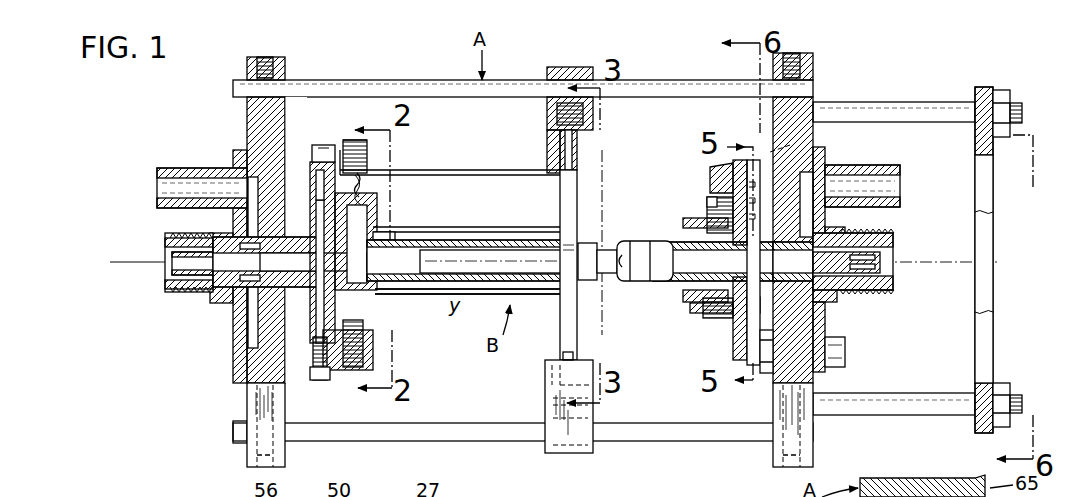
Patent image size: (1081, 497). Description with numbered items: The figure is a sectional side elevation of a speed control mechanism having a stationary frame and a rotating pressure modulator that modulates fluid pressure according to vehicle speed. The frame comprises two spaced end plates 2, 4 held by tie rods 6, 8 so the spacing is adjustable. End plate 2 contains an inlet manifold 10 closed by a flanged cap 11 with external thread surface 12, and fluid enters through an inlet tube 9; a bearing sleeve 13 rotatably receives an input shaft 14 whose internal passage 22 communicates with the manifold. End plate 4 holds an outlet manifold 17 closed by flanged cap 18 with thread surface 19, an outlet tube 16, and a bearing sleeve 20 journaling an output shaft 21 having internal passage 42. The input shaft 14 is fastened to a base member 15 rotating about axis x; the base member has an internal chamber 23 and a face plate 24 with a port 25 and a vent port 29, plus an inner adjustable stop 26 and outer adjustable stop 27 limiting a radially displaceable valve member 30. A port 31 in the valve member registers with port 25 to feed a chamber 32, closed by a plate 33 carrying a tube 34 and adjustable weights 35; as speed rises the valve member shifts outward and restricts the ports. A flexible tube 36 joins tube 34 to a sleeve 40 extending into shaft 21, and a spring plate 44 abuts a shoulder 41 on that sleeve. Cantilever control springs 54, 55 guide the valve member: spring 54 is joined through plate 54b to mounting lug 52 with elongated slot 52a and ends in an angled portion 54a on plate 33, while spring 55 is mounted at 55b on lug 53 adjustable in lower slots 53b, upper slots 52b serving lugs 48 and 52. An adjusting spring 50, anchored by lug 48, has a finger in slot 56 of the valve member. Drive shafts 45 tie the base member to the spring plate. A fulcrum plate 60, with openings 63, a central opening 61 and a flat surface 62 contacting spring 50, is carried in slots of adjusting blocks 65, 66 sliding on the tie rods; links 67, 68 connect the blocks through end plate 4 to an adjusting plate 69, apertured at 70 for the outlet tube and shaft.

The end plate 2 is at (246, 125).
The end plate 4 is at (815, 70).
The tie rod 6 is at (333, 80).
The tie rod 8 is at (233, 431).
The inlet tube 9 is at (172, 168).
The inlet manifold 10 is at (252, 322).
The flanged cap 11 is at (248, 305).
The external thread surface 12 is at (175, 293).
The bearing sleeve 13 is at (300, 237).
The input shaft 14 is at (172, 276).
The base member 15 is at (318, 195).
The outlet tube 16 is at (900, 168).
The outlet manifold 17 is at (832, 337).
The flanged cap 18 is at (828, 322).
The external thread surface 19 is at (890, 292).
The bearing sleeve 20 is at (850, 217).
The output shaft 21 is at (890, 252).
The internal passage 22 is at (250, 288).
The internal chamber 23 is at (318, 305).
The face plate 24 is at (320, 345).
The port 25 is at (322, 218).
The inner adjustable stop 26 is at (375, 345).
The outer adjustable stop 27 is at (343, 150).
The vent port 29 is at (345, 287).
The valve member 30 is at (322, 162).
The port 31 is at (368, 215).
The chamber 32 is at (385, 280).
The plate 33 is at (372, 195).
The tube 34 is at (465, 276).
The adjustable weights 35 is at (395, 240).
The flexible tube 36 is at (490, 240).
The sleeve 40 is at (690, 292).
The shoulder 41 is at (780, 325).
The internal passage 42 is at (830, 292).
The spring plate 44 is at (735, 168).
The drive shaft 45 is at (620, 250).
The adjustable mounting lug 48 is at (730, 175).
The adjusting spring 50 is at (474, 170).
The adjustable mounting lug 52 is at (715, 195).
The elongated slot 52a is at (805, 185).
The upper parallel slot 52b is at (800, 143).
The mounting lug 53 is at (708, 325).
The lower parallel slot 53b is at (740, 348).
The cantilever control spring 54 is at (533, 227).
The angled portion 54a is at (393, 236).
The plate 54b is at (712, 210).
The cantilever control spring 55 is at (520, 295).
The control spring mounting 55b is at (705, 312).
The slot 56 is at (362, 178).
The fulcrum plate 60 is at (580, 160).
The central opening 61 is at (560, 345).
The flat surface 62 is at (552, 172).
The opening 63 is at (604, 250).
The adjusting block 65 is at (565, 67).
The adjusting block 66 is at (575, 453).
The link 67 is at (885, 102).
The link 68 is at (890, 393).
The adjusting plate 69 is at (985, 88).
The aperture 70 is at (995, 172).
The rotational axis x is at (140, 262).